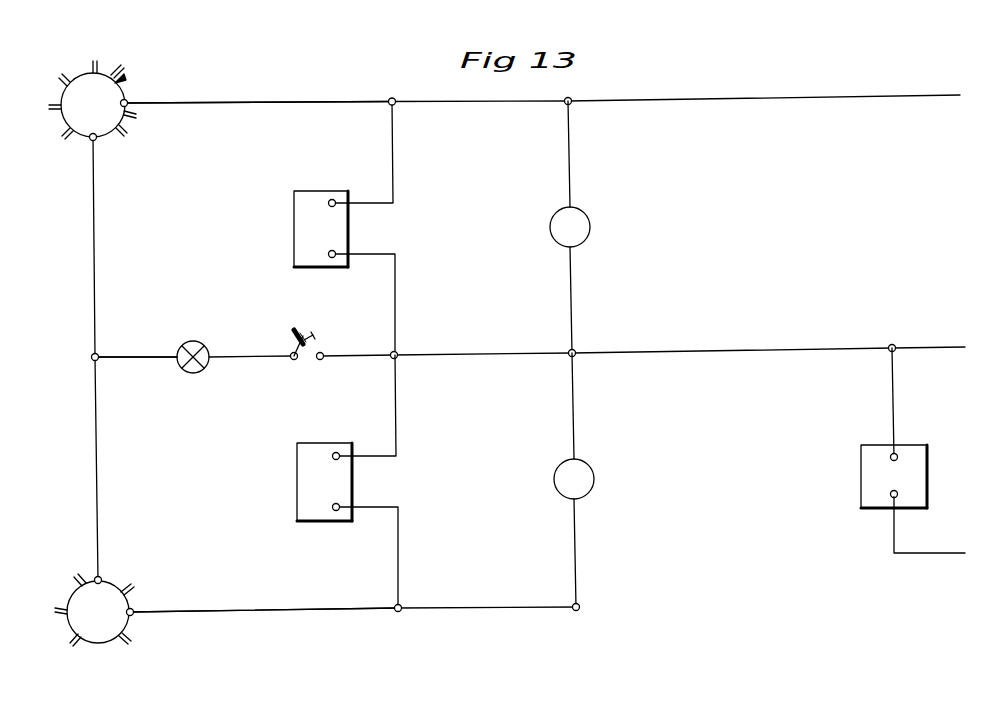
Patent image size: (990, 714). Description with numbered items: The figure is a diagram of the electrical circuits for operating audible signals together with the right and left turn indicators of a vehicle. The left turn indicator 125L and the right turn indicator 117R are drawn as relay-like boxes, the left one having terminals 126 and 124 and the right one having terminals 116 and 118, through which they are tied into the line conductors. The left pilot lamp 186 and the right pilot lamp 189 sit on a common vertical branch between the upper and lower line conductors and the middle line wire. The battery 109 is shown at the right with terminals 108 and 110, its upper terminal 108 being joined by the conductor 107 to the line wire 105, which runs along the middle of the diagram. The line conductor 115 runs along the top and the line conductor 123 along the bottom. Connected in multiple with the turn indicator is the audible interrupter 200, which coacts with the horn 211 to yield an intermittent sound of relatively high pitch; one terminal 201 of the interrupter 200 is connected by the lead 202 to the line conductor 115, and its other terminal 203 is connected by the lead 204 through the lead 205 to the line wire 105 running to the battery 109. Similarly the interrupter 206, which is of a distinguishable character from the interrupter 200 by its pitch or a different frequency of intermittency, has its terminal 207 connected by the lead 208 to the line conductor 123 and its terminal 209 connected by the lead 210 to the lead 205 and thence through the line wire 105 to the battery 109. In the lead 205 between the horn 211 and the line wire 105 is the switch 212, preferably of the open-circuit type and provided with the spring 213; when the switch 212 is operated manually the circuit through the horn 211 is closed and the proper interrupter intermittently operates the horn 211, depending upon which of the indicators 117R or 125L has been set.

The audible interrupter 200 is at (105, 90).
The terminal 201 is at (128, 101).
The lead 202 is at (268, 103).
The terminal 203 is at (96, 141).
The lead 204 is at (95, 250).
The lead 205 is at (118, 357).
The interrupter 206 is at (105, 634).
The terminal 207 is at (133, 610).
The lead 208 is at (268, 608).
The terminal 209 is at (101, 577).
The lead 210 is at (97, 478).
The horn 211 is at (206, 350).
The switch 212 is at (306, 360).
The spring 213 is at (294, 330).
The line conductor 115 is at (430, 101).
The line wire 105 is at (452, 355).
The line conductor 123 is at (445, 607).
The left turn indicator 125L is at (300, 228).
The relay terminal 126 is at (332, 199).
The relay terminal 124 is at (330, 258).
The right turn indicator 117R is at (303, 480).
The relay terminal 116 is at (336, 452).
The relay terminal 118 is at (334, 511).
The left pilot lamp 186 is at (590, 227).
The right pilot lamp 189 is at (594, 479).
The conductor 107 is at (895, 397).
The relay terminal 108 is at (892, 454).
The battery 109 is at (870, 483).
The relay terminal 110 is at (892, 497).